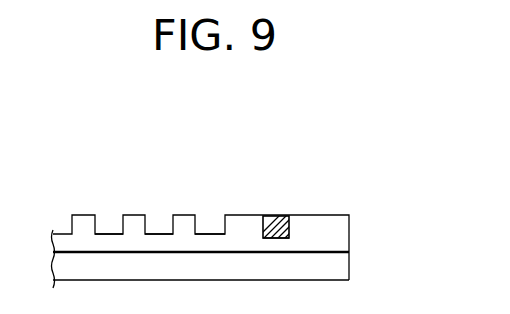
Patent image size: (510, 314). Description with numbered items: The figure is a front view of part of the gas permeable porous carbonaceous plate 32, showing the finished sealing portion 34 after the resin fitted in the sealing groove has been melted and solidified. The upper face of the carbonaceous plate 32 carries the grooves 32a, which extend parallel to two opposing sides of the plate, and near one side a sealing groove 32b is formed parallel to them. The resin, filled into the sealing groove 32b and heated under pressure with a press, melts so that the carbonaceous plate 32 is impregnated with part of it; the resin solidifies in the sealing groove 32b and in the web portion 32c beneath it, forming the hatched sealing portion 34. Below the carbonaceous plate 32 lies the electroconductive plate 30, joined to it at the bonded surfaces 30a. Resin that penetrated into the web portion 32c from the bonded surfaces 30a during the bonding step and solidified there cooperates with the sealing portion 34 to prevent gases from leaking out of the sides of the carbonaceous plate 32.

The electroconductive plate 30 is at (343, 273).
The bonded surfaces 30a is at (343, 257).
The gas permeable porous carbonaceous plate 32 is at (342, 237).
The grooves 32a is at (112, 228).
The sealing groove 32b is at (280, 220).
The web portion 32c is at (285, 248).
The sealing portion 34 is at (266, 216).